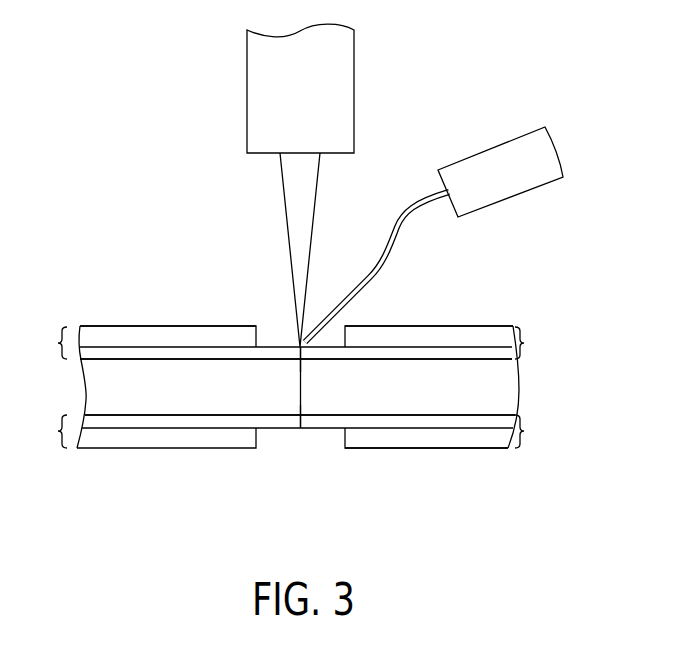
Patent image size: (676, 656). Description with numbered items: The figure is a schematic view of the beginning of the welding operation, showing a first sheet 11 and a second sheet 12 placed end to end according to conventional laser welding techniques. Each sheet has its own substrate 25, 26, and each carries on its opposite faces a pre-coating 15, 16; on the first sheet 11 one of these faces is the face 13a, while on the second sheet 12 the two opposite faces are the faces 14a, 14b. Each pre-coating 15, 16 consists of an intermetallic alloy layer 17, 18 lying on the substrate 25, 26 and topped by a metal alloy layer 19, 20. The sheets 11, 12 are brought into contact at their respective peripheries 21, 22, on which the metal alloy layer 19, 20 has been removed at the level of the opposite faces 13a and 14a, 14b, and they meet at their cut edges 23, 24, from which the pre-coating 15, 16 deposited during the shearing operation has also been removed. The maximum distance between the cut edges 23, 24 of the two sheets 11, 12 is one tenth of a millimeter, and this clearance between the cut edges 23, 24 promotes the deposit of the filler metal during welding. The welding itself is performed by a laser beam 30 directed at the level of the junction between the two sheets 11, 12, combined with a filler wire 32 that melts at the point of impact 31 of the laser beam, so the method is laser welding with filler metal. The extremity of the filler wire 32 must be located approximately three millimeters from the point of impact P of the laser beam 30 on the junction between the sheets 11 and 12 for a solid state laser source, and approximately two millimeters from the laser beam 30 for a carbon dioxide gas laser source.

The first sheet 11 is at (159, 350).
The second sheet 12 is at (450, 376).
The face of the first sheet 13a is at (178, 327).
The face of the second sheet 14a is at (495, 327).
The face of the second sheet 14b is at (490, 450).
The pre-coating of the first sheet 15 is at (52, 387).
The pre-coating of the second sheet 16 is at (535, 387).
The intermetallic alloy layer 17 is at (103, 357).
The intermetallic alloy layer 18 is at (498, 355).
The metal alloy layer 19 is at (98, 327).
The metal alloy layer 20 is at (411, 327).
The periphery of the first sheet 21 is at (282, 447).
The periphery of the second sheet 22 is at (318, 447).
The cut edge of the first sheet 23 is at (300, 372).
The cut edge of the second sheet 24 is at (300, 408).
The substrate of the first sheet 25 is at (203, 397).
The substrate of the second sheet 26 is at (493, 398).
The laser beam 30 is at (329, 185).
The point of impact of the laser beam 31 is at (300, 347).
The filler wire 32 is at (418, 200).
The point of impact of the laser beam P is at (300, 347).